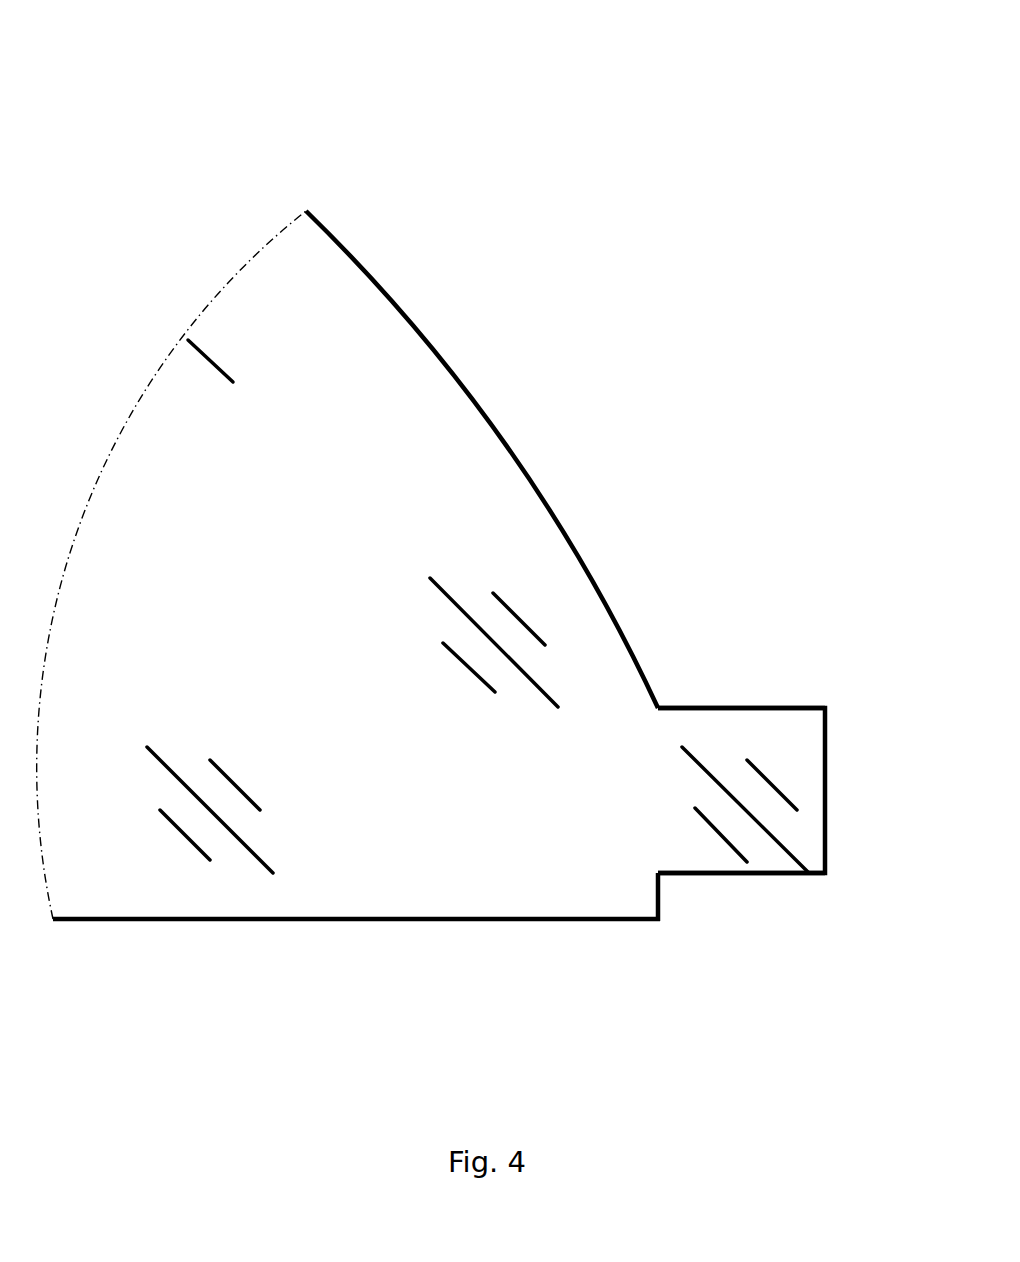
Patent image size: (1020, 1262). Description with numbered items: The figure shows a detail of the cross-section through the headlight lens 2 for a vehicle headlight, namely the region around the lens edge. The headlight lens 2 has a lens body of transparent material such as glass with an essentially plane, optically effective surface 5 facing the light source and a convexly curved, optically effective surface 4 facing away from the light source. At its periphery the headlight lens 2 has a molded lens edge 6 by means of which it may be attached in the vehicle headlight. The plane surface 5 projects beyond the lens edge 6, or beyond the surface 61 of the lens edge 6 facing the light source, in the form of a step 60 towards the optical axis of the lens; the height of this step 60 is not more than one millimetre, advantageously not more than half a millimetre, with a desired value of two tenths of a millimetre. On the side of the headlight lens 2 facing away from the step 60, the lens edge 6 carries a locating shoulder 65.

The headlight lens 2 is at (800, 133).
The convexly curved optically effective surface 4 is at (472, 395).
The essentially plane optically effective surface 5 is at (357, 918).
The lens edge 6 is at (806, 760).
The step 60 is at (662, 898).
The surface of the lens edge facing the light source 61 is at (760, 873).
The locating shoulder 65 is at (753, 712).